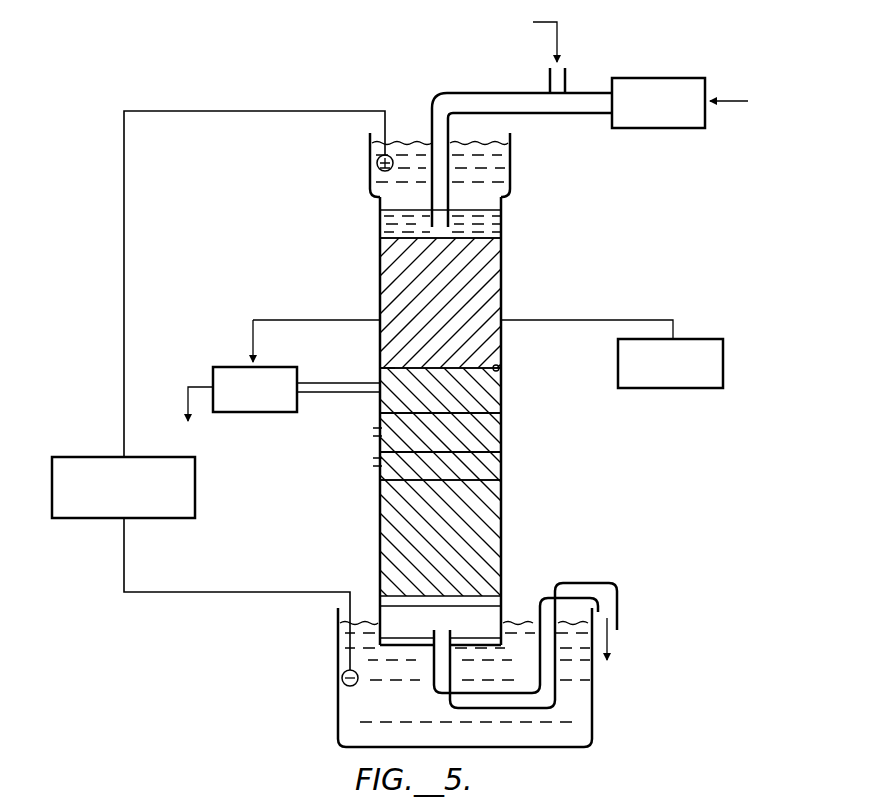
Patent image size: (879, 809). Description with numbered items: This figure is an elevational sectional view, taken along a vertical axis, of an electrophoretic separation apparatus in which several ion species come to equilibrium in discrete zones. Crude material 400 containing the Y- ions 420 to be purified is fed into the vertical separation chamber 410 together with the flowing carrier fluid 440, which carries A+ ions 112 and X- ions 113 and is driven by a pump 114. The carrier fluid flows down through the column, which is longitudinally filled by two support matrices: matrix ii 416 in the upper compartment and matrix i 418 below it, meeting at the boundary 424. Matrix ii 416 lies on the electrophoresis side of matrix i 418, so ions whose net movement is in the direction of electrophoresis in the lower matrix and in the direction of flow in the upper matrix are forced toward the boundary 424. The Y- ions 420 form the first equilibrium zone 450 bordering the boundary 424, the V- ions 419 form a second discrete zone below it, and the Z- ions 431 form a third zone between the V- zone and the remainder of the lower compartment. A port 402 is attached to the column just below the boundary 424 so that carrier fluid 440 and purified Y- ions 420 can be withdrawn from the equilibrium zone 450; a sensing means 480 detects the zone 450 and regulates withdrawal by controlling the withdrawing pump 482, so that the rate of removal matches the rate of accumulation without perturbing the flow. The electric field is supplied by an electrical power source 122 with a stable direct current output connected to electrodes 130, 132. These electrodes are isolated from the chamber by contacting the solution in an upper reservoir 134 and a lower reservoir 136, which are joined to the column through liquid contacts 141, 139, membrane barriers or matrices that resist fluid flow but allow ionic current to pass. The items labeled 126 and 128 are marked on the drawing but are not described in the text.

The crude material 400 is at (342, 26).
The A+ ions 112 is at (433, 110).
The X- ions 113 is at (463, 96).
The pump 114 is at (697, 78).
The carrier fluid 440 is at (566, 118).
The electrode 130 is at (376, 161).
The reservoir 134 is at (497, 181).
The liquid contact 141 is at (386, 205).
The Y- ions 420 is at (412, 262).
The separation chamber 410 is at (512, 256).
The matrix ii 416 is at (492, 290).
The withdrawing pump 482 is at (275, 367).
The bed interface 126 is at (395, 362).
The boundary 424 is at (500, 368).
The sensing means 480 is at (708, 339).
The equilibrium zone 450 is at (496, 383).
The port 402 is at (380, 392).
The withdrawal port 128 is at (380, 430).
The V- ions 419 is at (474, 435).
The Z- ions 431 is at (476, 464).
The electrical power source 122 is at (193, 460).
The matrix i 418 is at (492, 502).
The electrode 132 is at (342, 674).
The liquid contact 139 is at (418, 638).
The reservoir 136 is at (352, 722).